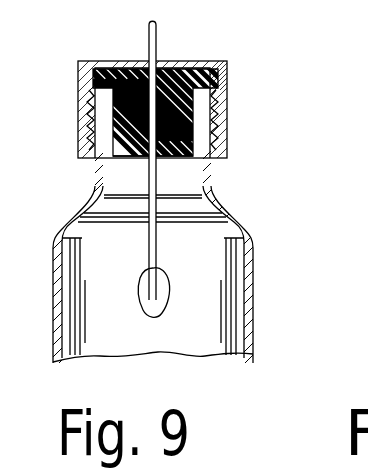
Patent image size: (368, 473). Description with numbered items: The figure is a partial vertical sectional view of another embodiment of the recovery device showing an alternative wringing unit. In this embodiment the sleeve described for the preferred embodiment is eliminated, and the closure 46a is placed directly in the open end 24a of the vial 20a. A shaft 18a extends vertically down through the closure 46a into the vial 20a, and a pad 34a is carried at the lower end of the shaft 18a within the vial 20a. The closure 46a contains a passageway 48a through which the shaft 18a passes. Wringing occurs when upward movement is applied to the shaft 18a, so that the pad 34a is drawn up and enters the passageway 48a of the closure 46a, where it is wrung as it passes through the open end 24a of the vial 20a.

The shaft 18a is at (157, 40).
The vial 20a is at (298, 247).
The open end 24a is at (198, 130).
The pad 34a is at (171, 283).
The closure 46a is at (122, 115).
The passageway 48a is at (143, 162).